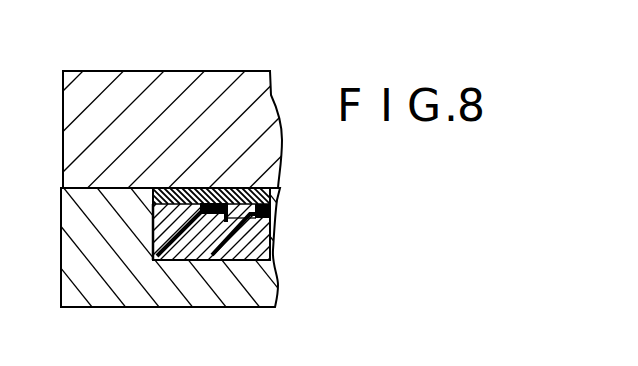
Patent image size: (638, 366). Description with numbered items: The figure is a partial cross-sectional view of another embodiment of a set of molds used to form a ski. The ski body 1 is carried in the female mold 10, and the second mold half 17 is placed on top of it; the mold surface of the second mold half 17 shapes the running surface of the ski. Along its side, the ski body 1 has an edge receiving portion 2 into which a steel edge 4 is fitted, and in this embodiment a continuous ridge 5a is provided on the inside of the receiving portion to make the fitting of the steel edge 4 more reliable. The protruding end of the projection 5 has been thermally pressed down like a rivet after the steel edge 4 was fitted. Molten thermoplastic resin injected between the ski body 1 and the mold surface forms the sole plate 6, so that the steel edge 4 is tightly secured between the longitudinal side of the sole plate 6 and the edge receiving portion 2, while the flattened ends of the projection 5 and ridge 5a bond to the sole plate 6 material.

The second mold half 17 is at (131, 114).
The steel edge 4 is at (150, 198).
The edge receiving portion 2 is at (152, 220).
The projection 5 is at (181, 192).
The continuous ridge 5a is at (208, 197).
The sole plate 6 is at (266, 205).
The female mold 10 is at (242, 287).
The ski body 1 is at (217, 245).